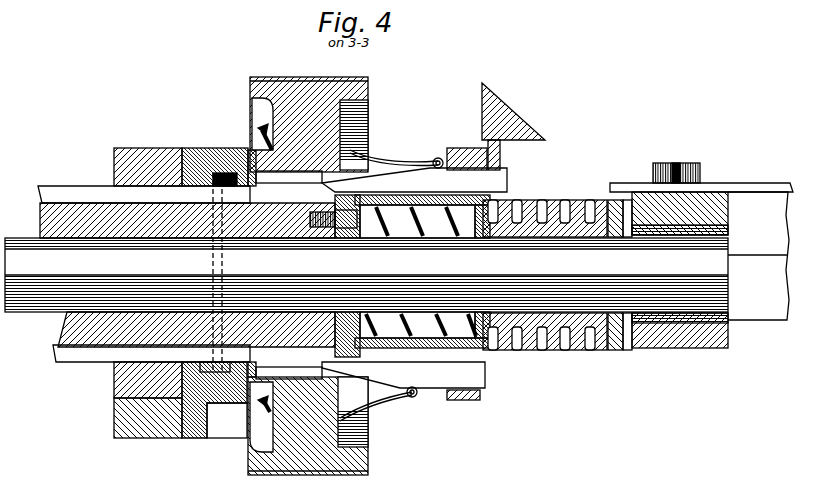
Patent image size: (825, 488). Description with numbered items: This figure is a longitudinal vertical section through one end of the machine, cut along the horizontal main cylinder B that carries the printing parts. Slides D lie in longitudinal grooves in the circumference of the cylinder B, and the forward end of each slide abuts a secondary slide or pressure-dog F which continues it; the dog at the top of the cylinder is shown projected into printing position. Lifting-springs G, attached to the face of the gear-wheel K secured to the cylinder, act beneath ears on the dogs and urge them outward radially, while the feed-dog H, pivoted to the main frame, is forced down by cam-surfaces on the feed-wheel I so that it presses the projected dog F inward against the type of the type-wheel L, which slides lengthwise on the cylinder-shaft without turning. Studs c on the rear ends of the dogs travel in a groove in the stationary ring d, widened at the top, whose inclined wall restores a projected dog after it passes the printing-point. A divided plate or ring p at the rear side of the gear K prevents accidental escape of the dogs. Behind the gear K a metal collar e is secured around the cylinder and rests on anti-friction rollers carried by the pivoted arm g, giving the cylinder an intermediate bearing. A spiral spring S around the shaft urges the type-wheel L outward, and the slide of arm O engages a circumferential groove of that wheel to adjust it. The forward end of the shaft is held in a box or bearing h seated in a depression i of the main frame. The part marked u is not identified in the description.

The main cylinder B is at (175, 275).
The slides D is at (144, 275).
The metal ring or collar e is at (232, 368).
The arm g is at (148, 418).
The stationary ring d is at (220, 147).
The studs c is at (240, 148).
The gear-wheel K is at (374, 92).
The divided or sectional plate or ring p is at (257, 176).
The block u is at (227, 420).
The pressure-dog F is at (414, 278).
The lifting-springs G is at (380, 157).
The feed-dog H is at (500, 160).
The feed-wheel I is at (470, 106).
The spiral spring S is at (400, 276).
The type-wheel L is at (556, 206).
The arm O is at (724, 189).
The box or bearing h is at (677, 350).
The depression i is at (397, 256).